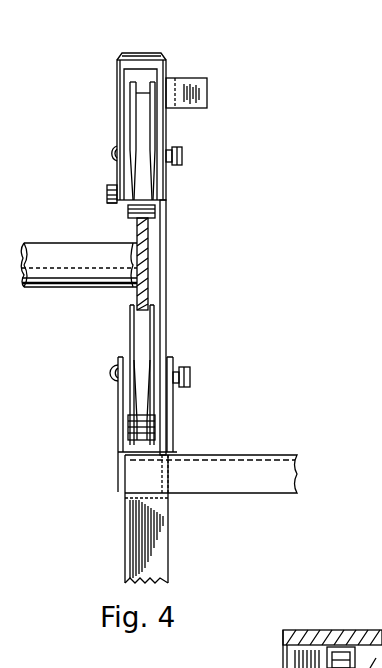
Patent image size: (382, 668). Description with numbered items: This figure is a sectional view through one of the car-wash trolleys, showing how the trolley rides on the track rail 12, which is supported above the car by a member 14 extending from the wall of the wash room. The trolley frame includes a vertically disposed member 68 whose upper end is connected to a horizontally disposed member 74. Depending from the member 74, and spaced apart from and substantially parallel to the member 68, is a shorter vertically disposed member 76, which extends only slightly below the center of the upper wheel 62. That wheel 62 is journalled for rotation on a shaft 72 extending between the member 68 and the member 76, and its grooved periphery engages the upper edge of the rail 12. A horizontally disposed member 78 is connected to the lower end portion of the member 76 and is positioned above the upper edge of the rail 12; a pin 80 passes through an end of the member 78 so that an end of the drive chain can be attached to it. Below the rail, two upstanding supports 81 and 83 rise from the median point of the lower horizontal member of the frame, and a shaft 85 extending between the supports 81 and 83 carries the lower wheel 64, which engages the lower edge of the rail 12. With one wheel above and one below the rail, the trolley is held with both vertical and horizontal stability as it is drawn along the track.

The track rail 12 is at (150, 260).
The member 14 is at (104, 243).
The wheel 62 is at (134, 84).
The wheel 64 is at (130, 331).
The vertically disposed member 68 is at (167, 284).
The shaft 72 is at (110, 155).
The horizontally disposed member 74 is at (137, 53).
The vertically disposed member 76 is at (117, 100).
The horizontally disposed member 78 is at (108, 205).
The pin 80 is at (107, 194).
The upstanding support 81 is at (118, 420).
The upstanding support 83 is at (174, 418).
The shaft 85 is at (190, 378).